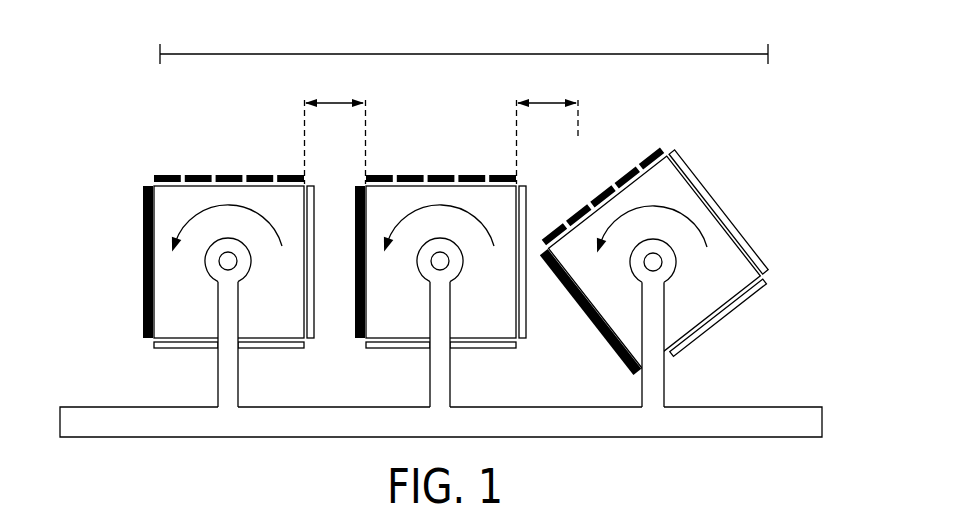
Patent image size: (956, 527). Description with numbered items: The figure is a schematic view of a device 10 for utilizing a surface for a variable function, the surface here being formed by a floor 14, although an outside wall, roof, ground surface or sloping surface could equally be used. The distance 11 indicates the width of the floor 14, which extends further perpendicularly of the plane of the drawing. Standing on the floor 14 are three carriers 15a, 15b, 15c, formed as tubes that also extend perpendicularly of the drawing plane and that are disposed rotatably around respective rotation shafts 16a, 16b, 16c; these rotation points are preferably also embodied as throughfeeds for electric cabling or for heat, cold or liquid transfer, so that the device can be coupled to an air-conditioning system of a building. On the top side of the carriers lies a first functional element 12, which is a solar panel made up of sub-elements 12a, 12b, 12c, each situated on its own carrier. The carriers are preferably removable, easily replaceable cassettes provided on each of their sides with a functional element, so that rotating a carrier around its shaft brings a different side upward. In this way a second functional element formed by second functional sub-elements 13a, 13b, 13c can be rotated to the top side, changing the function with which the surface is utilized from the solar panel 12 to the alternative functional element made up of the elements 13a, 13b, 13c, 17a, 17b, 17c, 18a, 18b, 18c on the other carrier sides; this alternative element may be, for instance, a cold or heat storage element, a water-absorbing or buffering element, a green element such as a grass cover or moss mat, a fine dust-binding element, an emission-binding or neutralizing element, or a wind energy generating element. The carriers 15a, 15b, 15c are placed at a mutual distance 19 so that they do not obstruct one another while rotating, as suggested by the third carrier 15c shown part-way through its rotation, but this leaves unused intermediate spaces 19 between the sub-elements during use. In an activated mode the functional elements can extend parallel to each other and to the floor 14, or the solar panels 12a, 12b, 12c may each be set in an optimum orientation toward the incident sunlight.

The device 10 is at (755, 123).
The distance 11 is at (462, 52).
The first functional element 12 is at (408, 178).
The sub-element 12a is at (246, 176).
The sub-element 12b is at (458, 176).
The sub-element 12c is at (599, 195).
The second functional sub-element 13a is at (117, 262).
The second functional sub-element 13b is at (340, 262).
The second functional sub-element 13c is at (588, 312).
The floor 14 is at (92, 406).
The carrier 15a is at (229, 262).
The carrier 15b is at (441, 262).
The carrier 15c is at (655, 262).
The rotation shaft 16a is at (237, 262).
The rotation shaft 16b is at (449, 262).
The rotation shaft 16c is at (662, 263).
The functional element 17a is at (229, 370).
The functional element 17b is at (441, 370).
The functional element 17c is at (718, 322).
The functional element 18a is at (337, 281).
The functional element 18b is at (549, 281).
The functional element 18c is at (738, 212).
The mutual distance 19 is at (442, 130).